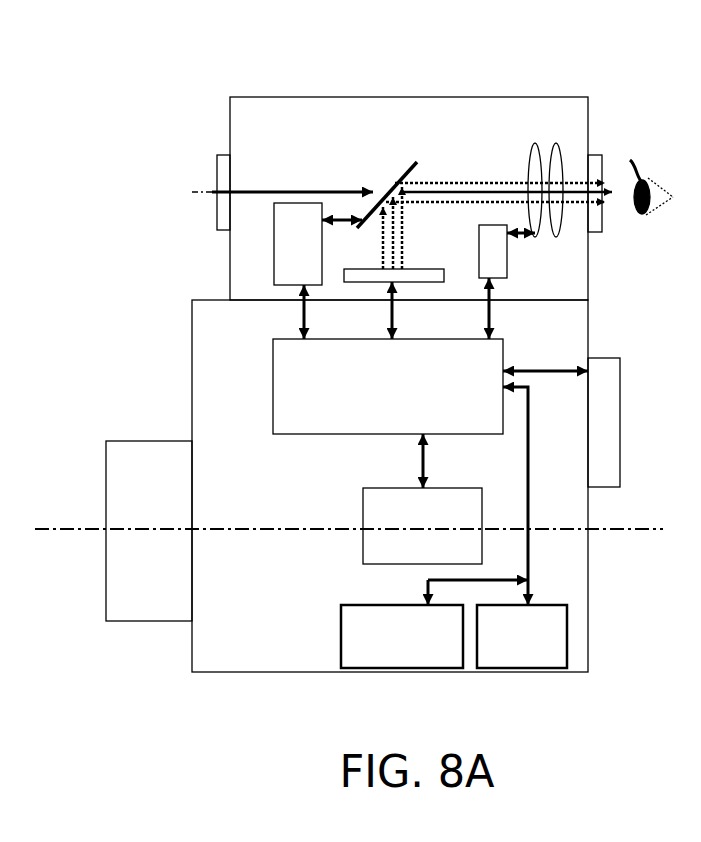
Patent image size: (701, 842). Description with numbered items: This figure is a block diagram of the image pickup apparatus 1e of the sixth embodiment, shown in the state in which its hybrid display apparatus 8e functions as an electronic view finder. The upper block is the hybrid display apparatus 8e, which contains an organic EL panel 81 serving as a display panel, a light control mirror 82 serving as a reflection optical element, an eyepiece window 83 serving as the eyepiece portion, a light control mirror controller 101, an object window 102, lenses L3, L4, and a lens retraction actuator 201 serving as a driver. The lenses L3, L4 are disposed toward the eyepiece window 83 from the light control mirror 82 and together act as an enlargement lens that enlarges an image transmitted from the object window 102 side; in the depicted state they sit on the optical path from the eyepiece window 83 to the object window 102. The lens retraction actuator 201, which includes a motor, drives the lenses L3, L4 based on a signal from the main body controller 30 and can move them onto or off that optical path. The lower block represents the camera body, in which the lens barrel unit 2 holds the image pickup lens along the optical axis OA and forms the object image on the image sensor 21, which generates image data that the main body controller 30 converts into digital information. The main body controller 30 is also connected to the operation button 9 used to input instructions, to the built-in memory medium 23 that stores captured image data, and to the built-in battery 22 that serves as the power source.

The image pickup apparatus 1e is at (650, 26).
The hybrid display apparatus 8e is at (425, 98).
The object window 102 is at (222, 220).
The eyepiece window 83 is at (601, 155).
The operation button 9 is at (620, 438).
The lens barrel unit 2 is at (122, 545).
The optical axis OA is at (72, 530).
The light control mirror controller 101 is at (274, 264).
The light control mirror 82 is at (406, 163).
The lens retraction actuator 201 is at (488, 225).
The lens L3 is at (537, 143).
The lens L4 is at (558, 143).
The organic EL panel 81 is at (444, 279).
The main body controller 30 is at (388, 386).
The image sensor 21 is at (372, 564).
The memory medium 23 is at (448, 668).
The battery 22 is at (548, 668).